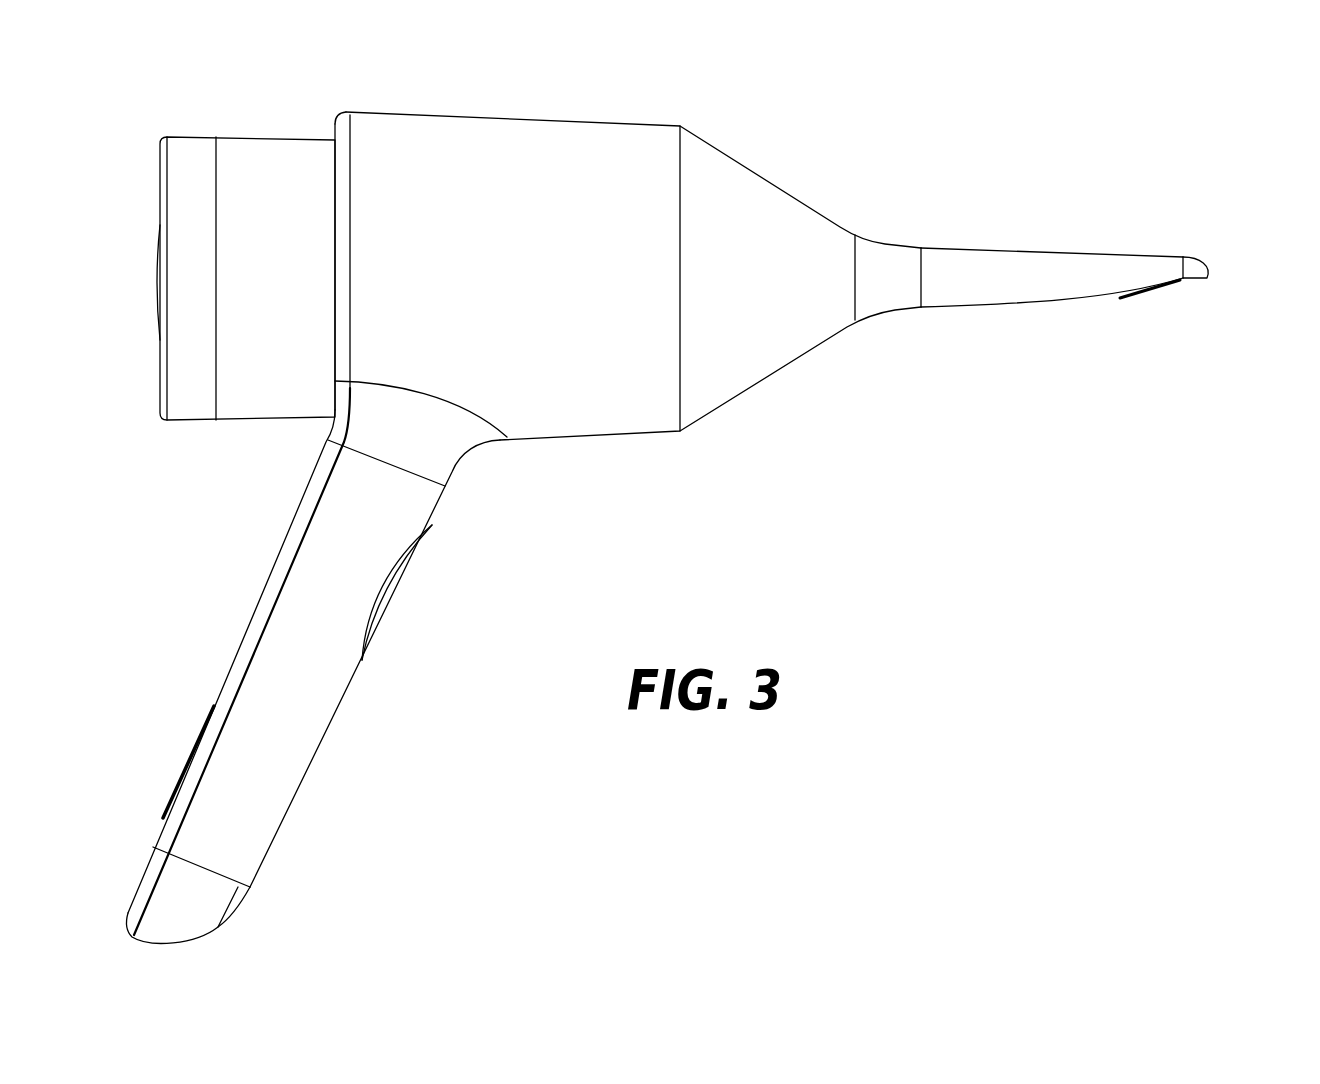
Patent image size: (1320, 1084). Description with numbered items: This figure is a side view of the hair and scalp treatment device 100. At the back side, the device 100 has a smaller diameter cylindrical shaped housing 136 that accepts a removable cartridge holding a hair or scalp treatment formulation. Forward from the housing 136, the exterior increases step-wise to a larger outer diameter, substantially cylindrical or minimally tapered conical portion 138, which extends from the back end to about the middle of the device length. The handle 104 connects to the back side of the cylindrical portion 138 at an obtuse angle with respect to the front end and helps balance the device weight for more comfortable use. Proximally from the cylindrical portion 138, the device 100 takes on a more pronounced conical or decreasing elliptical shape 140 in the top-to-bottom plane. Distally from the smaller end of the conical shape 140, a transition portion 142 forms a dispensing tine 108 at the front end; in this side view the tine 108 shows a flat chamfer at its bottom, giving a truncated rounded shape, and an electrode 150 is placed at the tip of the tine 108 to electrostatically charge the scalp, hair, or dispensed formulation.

The hair and scalp treatment device 100 is at (670, 108).
The handle 104 is at (258, 605).
The dispensing tine 108 is at (1160, 255).
The cylindrical shaped housing 136 is at (275, 141).
The substantially cylindrical section 138 is at (518, 122).
The conical or decreasing elliptical shape 140 is at (730, 163).
The transition portion 142 is at (883, 242).
The electrode 150 is at (1205, 262).